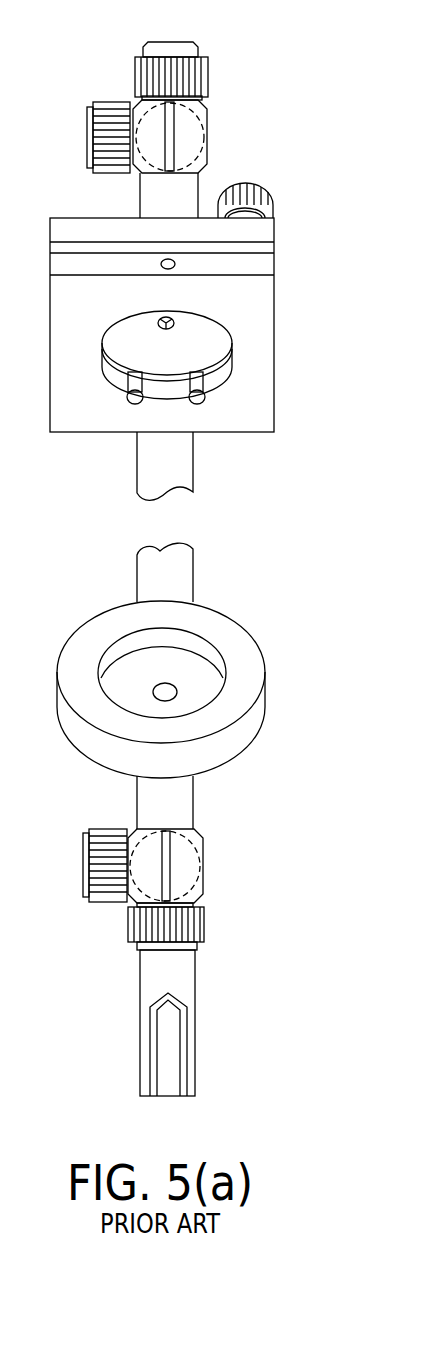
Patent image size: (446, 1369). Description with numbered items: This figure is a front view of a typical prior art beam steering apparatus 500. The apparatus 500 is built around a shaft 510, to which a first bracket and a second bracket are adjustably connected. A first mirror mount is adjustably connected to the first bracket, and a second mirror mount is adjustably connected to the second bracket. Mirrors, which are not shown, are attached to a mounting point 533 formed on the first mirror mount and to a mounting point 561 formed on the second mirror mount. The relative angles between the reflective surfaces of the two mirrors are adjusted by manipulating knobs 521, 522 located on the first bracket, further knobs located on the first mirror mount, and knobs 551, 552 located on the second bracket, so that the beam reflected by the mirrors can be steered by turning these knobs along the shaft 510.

The beam steering apparatus 500 is at (313, 566).
The shaft 510 is at (133, 577).
The knob 521 is at (210, 76).
The knob 522 is at (87, 142).
The mounting point 533 is at (170, 328).
The knob 551 is at (193, 950).
The knob 552 is at (83, 860).
The mounting point 561 is at (165, 692).